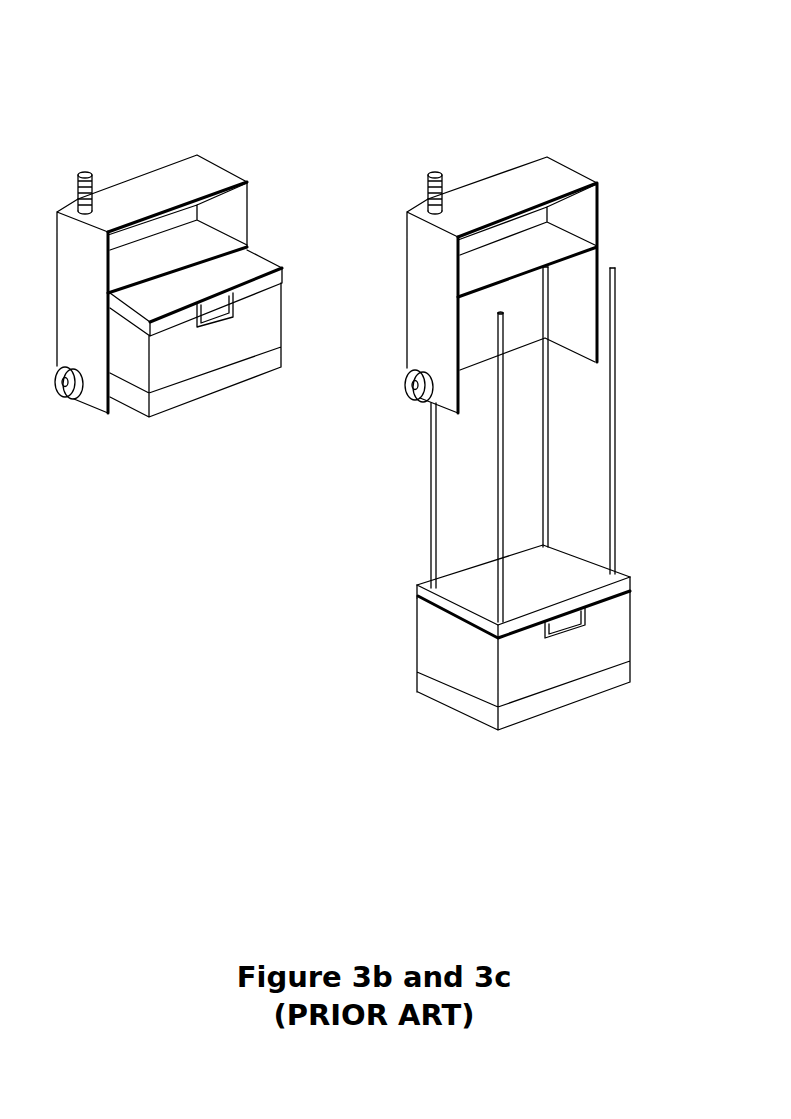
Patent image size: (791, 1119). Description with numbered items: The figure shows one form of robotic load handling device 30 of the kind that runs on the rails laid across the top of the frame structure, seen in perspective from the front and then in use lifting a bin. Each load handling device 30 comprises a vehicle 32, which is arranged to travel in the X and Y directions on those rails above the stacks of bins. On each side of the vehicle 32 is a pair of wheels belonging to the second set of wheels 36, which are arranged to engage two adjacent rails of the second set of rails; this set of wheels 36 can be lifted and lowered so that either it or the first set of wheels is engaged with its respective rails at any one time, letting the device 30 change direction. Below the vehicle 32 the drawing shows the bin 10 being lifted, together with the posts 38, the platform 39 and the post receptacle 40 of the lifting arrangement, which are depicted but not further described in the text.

In FIG. 3B, the load handling device 30 is at (150, 234).
In FIG. 3C, the load handling device 30 is at (530, 234).
In FIG. 3C, the vehicle 32 is at (557, 178).
In FIG. 3B, the second set of wheels 36 is at (68, 395).
In FIG. 3C, the second set of wheels 36 is at (412, 395).
In FIG. 3C, the guide posts 38 is at (433, 538).
In FIG. 3C, the platform 39 is at (583, 570).
In FIG. 3C, the post receptacle 40 is at (497, 305).
In FIG. 3B, the container 10 is at (185, 352).
In FIG. 3C, the container 10 is at (556, 614).